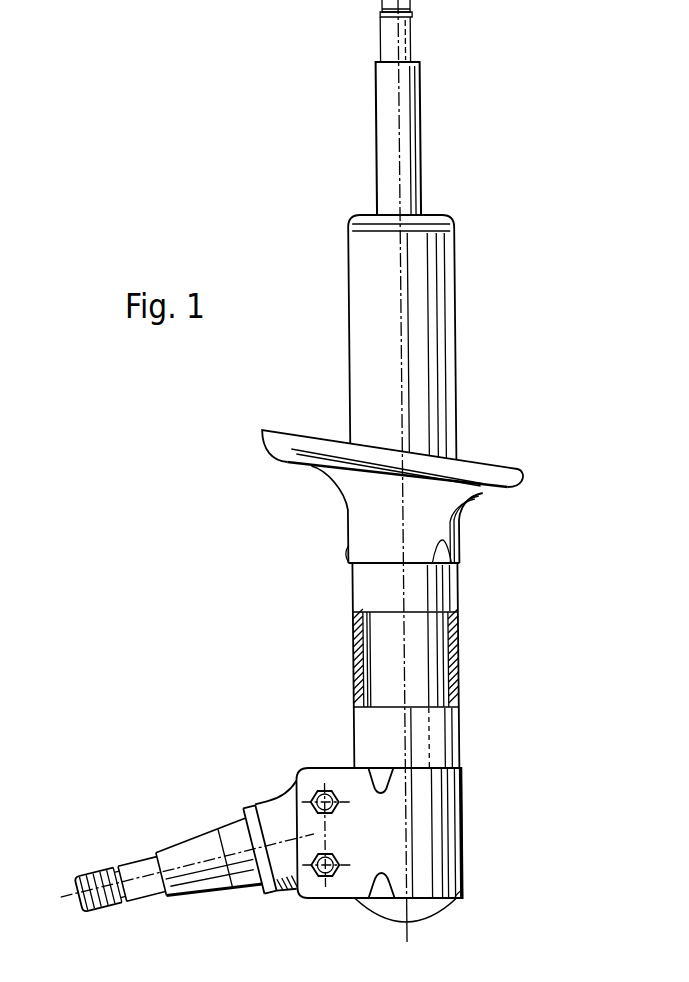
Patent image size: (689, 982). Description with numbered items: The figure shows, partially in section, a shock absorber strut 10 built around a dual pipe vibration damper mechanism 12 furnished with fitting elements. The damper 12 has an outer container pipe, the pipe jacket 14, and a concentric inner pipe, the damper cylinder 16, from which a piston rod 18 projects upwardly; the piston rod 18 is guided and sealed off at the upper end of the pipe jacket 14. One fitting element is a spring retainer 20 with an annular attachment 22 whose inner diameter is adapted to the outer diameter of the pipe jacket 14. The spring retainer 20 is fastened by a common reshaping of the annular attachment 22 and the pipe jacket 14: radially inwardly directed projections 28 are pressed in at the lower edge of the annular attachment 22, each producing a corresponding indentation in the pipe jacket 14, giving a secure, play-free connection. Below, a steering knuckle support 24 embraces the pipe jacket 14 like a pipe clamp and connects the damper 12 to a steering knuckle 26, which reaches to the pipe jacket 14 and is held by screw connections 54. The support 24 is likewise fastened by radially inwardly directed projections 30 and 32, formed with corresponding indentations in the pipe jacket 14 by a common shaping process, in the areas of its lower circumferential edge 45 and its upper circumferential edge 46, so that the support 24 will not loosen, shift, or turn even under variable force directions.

The shock absorber strut 10 is at (496, 220).
The dual pipe vibration damper mechanism 12 is at (460, 280).
The pipe jacket 14 is at (363, 269).
The damper cylinder 16 is at (428, 663).
The piston rod 18 is at (383, 121).
The spring retainer 20 is at (470, 472).
The annular attachment 22 is at (442, 513).
The steering knuckle support 24 is at (443, 835).
The steering knuckle 26 is at (203, 840).
The projections 28 is at (448, 555).
The projections 30 is at (463, 885).
The projections 32 is at (380, 769).
The lower circumferential edge 45 is at (446, 899).
The upper circumferential edge 46 is at (438, 769).
The screw connections 54 is at (341, 812).